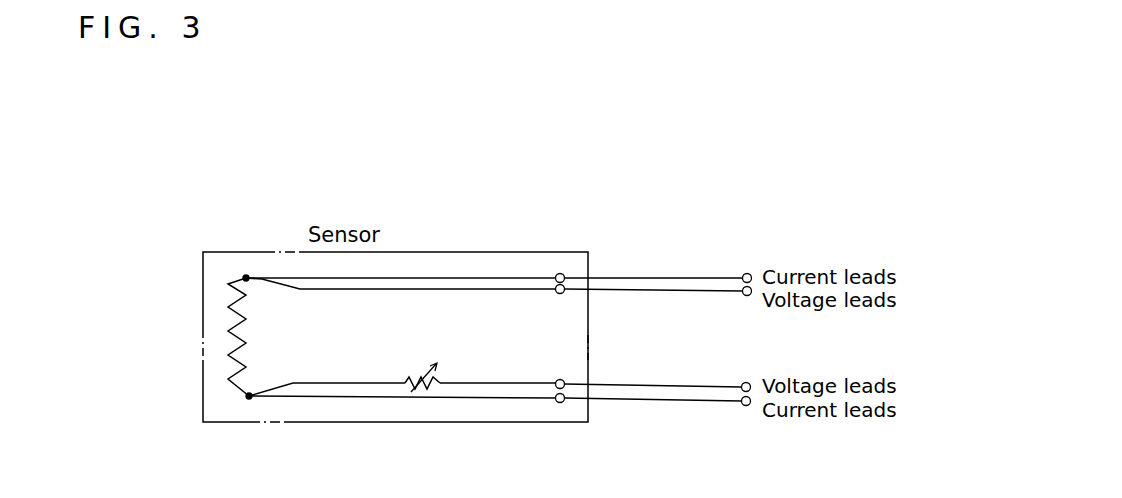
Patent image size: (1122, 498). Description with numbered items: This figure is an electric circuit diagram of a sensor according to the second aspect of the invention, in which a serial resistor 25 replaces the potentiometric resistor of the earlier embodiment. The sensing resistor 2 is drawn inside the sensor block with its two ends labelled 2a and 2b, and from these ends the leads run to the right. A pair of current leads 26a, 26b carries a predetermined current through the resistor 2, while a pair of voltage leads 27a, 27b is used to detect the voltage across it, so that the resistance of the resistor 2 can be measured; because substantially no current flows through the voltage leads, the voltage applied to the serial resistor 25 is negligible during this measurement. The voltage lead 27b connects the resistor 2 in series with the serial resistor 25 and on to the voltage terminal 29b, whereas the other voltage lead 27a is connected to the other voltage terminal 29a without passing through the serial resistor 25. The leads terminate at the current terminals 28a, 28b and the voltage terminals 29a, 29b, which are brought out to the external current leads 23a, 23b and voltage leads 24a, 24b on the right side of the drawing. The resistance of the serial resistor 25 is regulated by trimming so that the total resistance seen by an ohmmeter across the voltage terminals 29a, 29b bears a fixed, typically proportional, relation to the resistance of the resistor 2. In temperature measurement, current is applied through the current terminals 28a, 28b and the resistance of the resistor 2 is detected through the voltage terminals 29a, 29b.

The resistor 2 is at (238, 323).
The first sensor terminal 2a is at (246, 276).
The second sensor terminal 2b is at (249, 398).
The current lead terminal 23a is at (747, 273).
The current lead terminal 23b is at (746, 406).
The voltage lead terminal 24a is at (745, 296).
The voltage lead terminal 24b is at (746, 382).
The serial resistor 25 is at (412, 378).
The current lead 26a is at (442, 277).
The current lead 26b is at (372, 400).
The voltage lead 27a is at (506, 288).
The voltage lead 27b is at (553, 380).
The current terminal 28a is at (561, 273).
The current terminal 28b is at (564, 403).
The voltage terminal 29a is at (585, 280).
The voltage terminal 29b is at (585, 376).